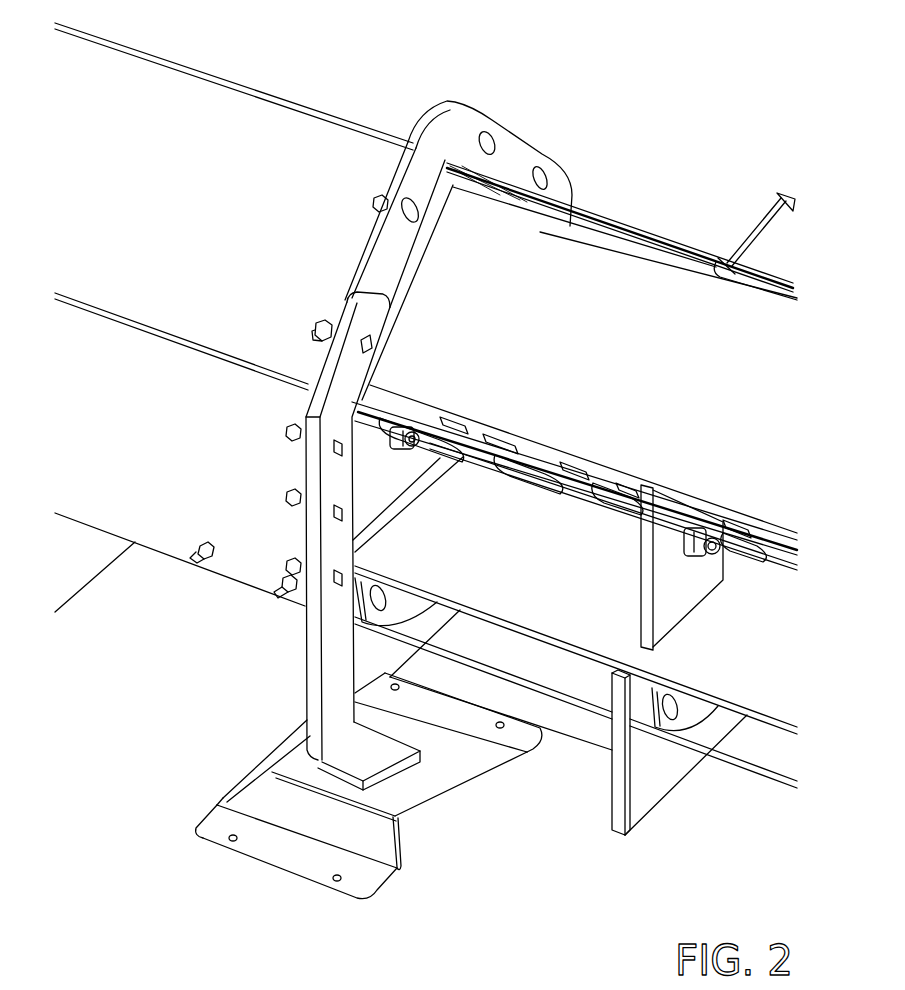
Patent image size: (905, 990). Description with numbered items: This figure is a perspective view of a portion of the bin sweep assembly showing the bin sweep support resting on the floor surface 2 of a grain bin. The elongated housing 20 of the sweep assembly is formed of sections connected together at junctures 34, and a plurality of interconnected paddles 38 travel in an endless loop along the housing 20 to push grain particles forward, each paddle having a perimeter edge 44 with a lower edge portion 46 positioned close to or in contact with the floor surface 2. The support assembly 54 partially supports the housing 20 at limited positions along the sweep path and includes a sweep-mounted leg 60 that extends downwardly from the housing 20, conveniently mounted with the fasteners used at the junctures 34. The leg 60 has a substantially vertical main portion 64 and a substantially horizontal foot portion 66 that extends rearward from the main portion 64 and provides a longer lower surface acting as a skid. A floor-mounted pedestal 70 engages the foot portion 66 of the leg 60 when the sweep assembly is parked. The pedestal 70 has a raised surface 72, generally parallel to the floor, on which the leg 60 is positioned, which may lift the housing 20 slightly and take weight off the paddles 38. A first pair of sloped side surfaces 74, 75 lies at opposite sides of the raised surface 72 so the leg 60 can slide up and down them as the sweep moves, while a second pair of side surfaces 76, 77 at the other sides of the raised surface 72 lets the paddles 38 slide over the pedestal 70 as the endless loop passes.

The floor surface 2 is at (507, 932).
The housing 20 is at (270, 132).
The junctures 34 is at (518, 147).
The paddles 38 is at (73, 568).
The perimeter edge 44 is at (612, 798).
The lower edge portion 46 is at (682, 780).
The support assembly 54 is at (222, 708).
The leg 60 is at (305, 523).
The main portion 64 is at (330, 629).
The foot portion 66 is at (367, 754).
The pedestal 70 is at (232, 780).
The raised surface 72 is at (382, 796).
The side surface 74 is at (462, 737).
The side surface 75 is at (277, 807).
The side surface 76 is at (283, 747).
The side surface 77 is at (413, 828).